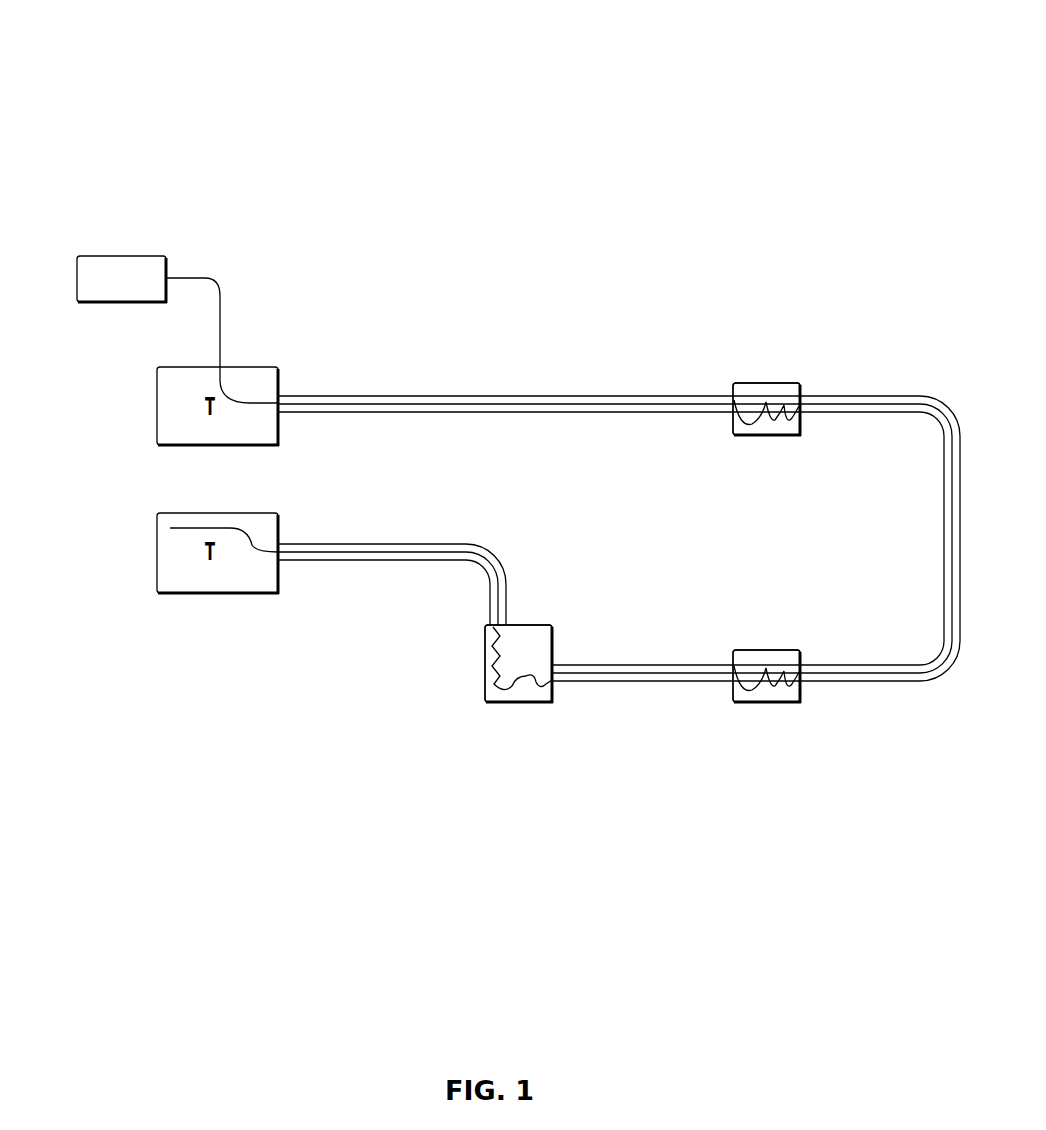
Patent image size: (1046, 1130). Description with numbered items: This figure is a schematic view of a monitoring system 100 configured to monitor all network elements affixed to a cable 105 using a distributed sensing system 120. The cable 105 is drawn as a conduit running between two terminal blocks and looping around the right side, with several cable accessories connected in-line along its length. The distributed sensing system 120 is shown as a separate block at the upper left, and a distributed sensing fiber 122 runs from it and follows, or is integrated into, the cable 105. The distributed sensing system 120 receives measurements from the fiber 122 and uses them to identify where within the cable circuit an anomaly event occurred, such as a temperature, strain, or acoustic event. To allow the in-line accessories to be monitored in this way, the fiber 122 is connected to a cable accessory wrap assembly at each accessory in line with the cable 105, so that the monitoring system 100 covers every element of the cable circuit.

The monitoring system 100 is at (268, 172).
The cable 105 is at (578, 398).
The distributed sensing system 120 is at (98, 266).
The distributed sensing fiber 122 is at (218, 297).